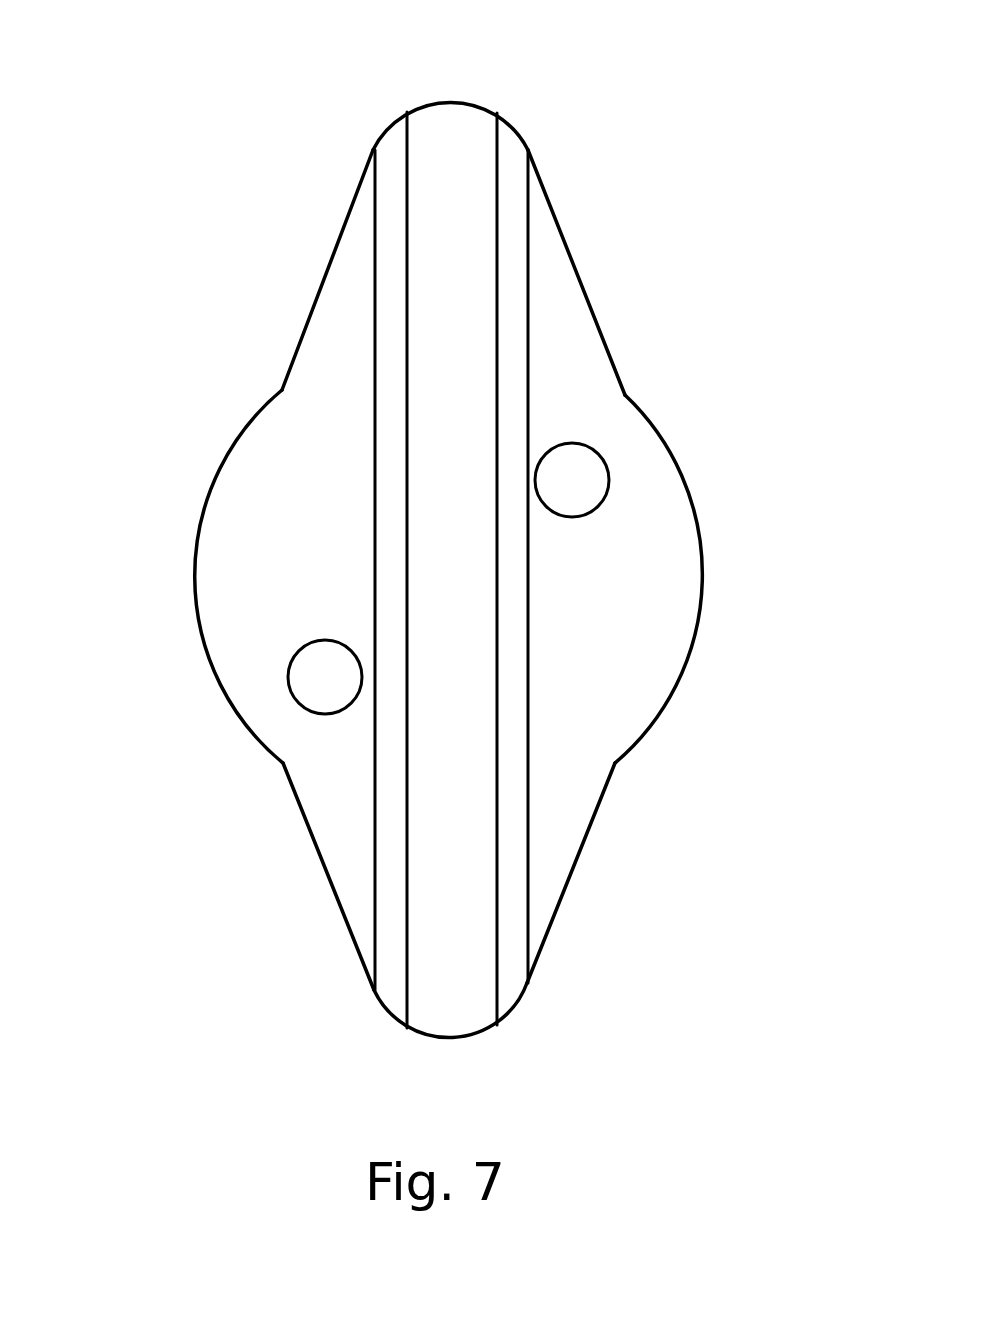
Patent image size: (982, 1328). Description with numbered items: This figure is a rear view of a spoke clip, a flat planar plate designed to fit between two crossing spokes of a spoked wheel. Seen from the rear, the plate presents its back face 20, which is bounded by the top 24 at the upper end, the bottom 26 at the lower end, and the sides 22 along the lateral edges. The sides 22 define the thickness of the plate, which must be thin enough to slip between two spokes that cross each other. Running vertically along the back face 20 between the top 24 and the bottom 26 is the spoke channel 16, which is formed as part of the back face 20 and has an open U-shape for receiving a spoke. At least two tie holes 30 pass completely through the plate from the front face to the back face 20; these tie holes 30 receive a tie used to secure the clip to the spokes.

The spoke channel 16 is at (462, 330).
The back face 20 is at (552, 358).
The sides 22 is at (195, 571).
The top 24 is at (444, 100).
The bottom 26 is at (449, 1043).
The tie holes 30 is at (588, 470).